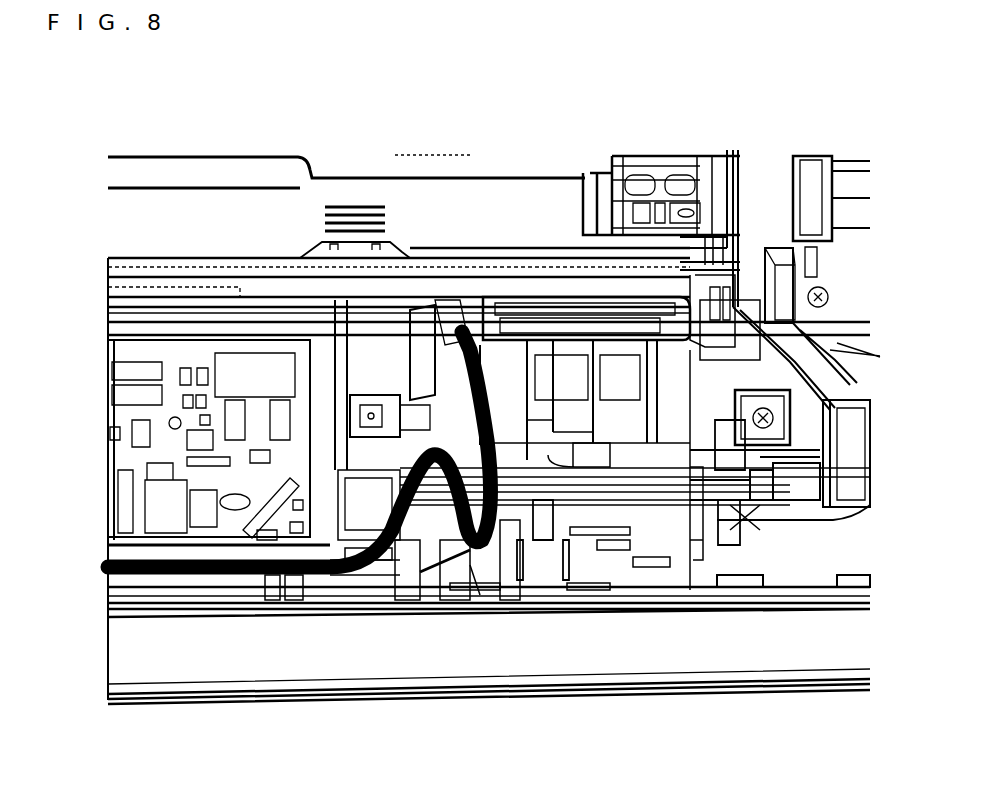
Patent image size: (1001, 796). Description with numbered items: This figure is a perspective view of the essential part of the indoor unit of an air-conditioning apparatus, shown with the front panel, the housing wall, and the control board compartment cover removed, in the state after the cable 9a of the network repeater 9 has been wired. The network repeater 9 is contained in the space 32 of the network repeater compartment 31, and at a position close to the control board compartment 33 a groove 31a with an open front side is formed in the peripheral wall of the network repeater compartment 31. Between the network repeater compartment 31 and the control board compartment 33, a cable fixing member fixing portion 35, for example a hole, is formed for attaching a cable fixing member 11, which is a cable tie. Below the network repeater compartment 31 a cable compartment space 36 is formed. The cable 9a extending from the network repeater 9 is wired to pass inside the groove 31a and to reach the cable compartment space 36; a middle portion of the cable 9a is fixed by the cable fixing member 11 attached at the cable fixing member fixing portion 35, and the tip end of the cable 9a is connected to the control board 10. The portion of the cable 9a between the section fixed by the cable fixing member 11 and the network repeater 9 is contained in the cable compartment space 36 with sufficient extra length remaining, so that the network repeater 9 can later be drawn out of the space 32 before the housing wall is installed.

The network repeater 9 is at (585, 340).
The cable 9a is at (350, 565).
The control board 10 is at (167, 503).
The cable fixing member 11 is at (430, 480).
The network repeater compartment 31 is at (625, 352).
The groove 31a is at (483, 345).
The space 32 is at (445, 325).
The control board compartment 33 is at (108, 325).
The cable fixing member fixing portion 35 is at (371, 405).
The cable compartment space 36 is at (472, 565).